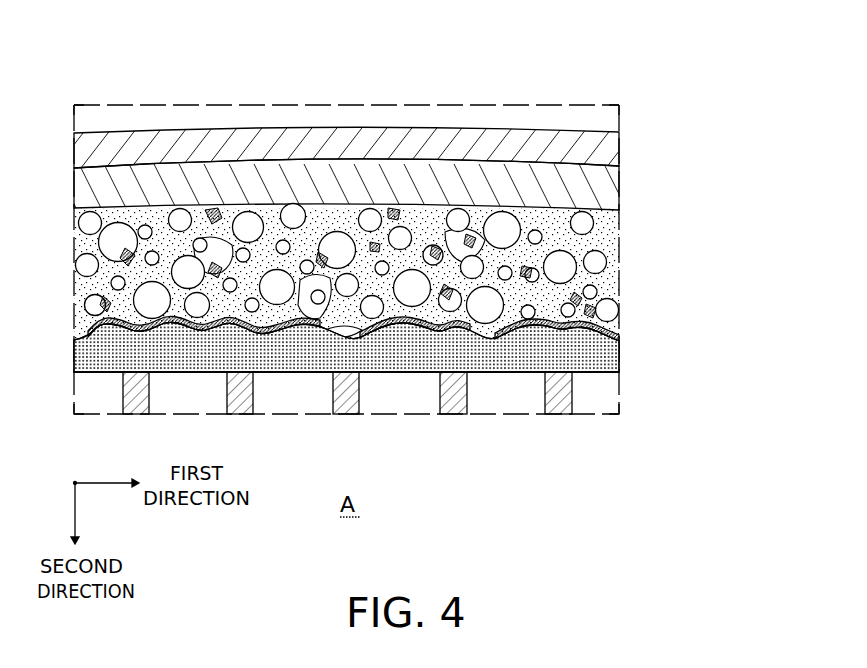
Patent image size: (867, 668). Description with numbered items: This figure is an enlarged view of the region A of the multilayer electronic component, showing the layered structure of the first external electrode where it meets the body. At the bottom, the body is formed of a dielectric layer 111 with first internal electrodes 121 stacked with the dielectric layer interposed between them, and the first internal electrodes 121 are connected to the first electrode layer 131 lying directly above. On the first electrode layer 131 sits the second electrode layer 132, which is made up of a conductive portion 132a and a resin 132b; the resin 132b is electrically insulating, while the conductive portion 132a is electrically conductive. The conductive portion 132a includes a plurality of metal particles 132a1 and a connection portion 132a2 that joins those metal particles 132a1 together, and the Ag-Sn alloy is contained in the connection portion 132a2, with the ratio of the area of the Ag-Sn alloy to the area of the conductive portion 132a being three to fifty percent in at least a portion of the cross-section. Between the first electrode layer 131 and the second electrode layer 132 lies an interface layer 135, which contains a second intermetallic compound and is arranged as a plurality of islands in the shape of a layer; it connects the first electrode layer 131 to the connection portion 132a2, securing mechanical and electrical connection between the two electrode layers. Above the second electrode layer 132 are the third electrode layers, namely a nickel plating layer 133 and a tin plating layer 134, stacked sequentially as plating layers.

The tin plating layer 134 is at (618, 162).
The nickel plating layer 133 is at (618, 201).
The second electrode layer 132 is at (458, 274).
The resin 132b is at (608, 234).
The conductive portion 132a is at (430, 264).
The metal particles 132a1 is at (600, 255).
The connection portion 132a2 is at (600, 293).
The Ag-Sn alloy Ag-Sn is at (614, 318).
The interface layer 135 is at (613, 338).
The first electrode layer 131 is at (410, 347).
The dielectric layer 111 is at (503, 398).
The first internal electrode 121 is at (562, 404).